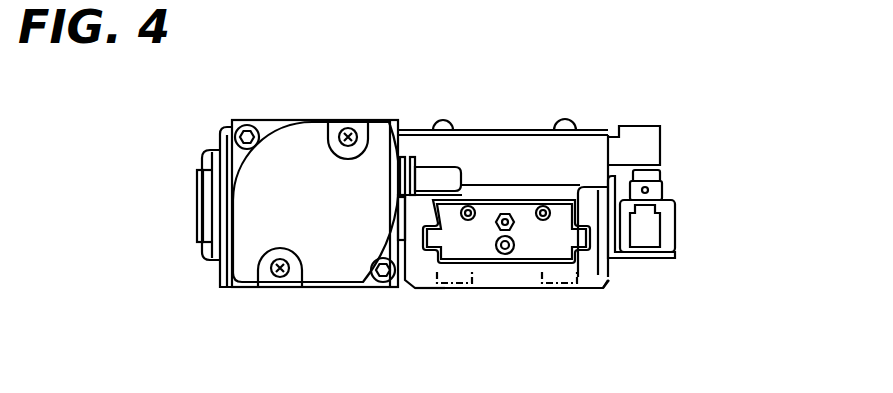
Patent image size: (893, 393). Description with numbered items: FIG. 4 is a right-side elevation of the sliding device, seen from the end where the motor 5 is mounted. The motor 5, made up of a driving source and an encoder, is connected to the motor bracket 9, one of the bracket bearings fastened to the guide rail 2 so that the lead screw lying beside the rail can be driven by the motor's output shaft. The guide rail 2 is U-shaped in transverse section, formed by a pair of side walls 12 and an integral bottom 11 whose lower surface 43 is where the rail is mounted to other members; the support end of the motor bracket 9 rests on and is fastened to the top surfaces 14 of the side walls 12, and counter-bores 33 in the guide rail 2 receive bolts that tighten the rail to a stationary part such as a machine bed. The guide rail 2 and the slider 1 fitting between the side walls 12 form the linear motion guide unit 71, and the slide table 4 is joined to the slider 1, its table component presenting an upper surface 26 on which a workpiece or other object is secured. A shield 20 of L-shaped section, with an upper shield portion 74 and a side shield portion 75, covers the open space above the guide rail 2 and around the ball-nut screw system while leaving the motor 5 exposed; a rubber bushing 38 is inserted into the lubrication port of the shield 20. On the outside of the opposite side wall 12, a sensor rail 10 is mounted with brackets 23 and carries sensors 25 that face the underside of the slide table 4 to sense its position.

The slider 1 is at (531, 245).
The guide rail 2 is at (588, 273).
The slide table 4 is at (648, 142).
The motor 5 is at (258, 207).
The motor bracket 9 is at (532, 165).
The sensor rail 10 is at (667, 222).
The bottom 11 is at (497, 278).
The side wall 12 is at (421, 210).
The top surface 14 is at (595, 200).
The shield 20 is at (216, 140).
The bracket 23 is at (648, 260).
The sensor 25 is at (655, 188).
The upper surface 26 is at (635, 127).
The counter-bore 33 is at (467, 275).
The bushing 38 is at (213, 160).
The lower surface 43 is at (438, 290).
The linear motion guide unit 71 is at (618, 281).
The upper shield portion 74 is at (477, 132).
The side shield portion 75 is at (222, 252).